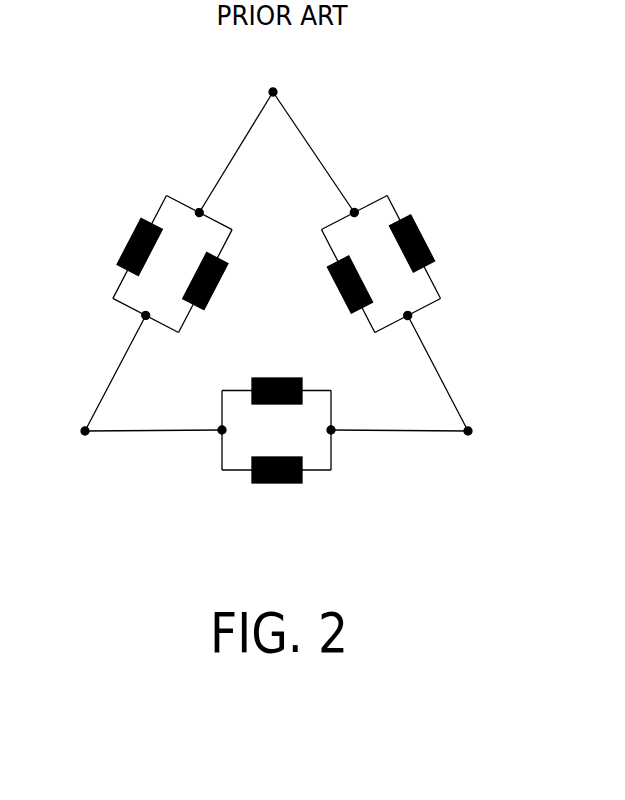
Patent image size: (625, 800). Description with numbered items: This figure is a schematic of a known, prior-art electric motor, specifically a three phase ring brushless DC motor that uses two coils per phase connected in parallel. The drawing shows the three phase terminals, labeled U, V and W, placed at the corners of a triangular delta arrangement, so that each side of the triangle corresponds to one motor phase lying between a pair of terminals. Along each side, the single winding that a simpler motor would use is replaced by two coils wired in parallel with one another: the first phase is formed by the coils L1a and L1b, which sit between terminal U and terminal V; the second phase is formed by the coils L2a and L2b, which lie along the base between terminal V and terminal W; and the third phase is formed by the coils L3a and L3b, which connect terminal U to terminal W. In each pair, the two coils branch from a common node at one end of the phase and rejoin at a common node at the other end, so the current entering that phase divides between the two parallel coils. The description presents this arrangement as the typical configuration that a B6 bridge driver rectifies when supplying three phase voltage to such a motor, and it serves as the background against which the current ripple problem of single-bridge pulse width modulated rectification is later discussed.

The motor phase terminal U is at (275, 74).
The motor phase terminal V is at (73, 431).
The motor phase terminal W is at (484, 431).
The first winding coil of phase 1 L1a is at (133, 243).
The second winding coil of phase 1 L1b is at (199, 279).
The first winding coil of phase 2 L2a is at (276, 383).
The second winding coil of phase 2 L2b is at (276, 463).
The first winding coil of phase 3 L3a is at (421, 243).
The second winding coil of phase 3 L3b is at (353, 278).